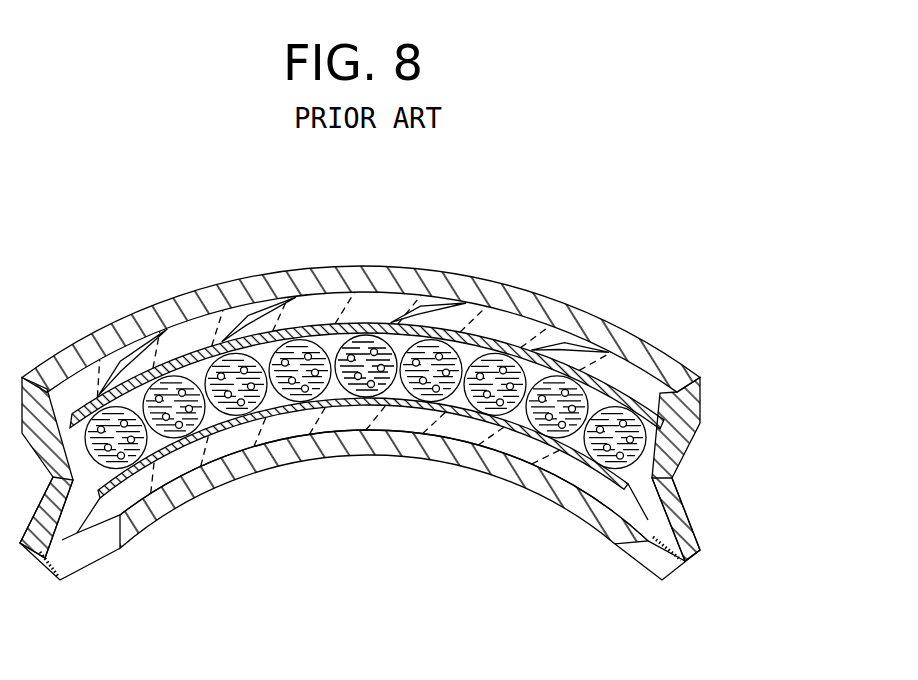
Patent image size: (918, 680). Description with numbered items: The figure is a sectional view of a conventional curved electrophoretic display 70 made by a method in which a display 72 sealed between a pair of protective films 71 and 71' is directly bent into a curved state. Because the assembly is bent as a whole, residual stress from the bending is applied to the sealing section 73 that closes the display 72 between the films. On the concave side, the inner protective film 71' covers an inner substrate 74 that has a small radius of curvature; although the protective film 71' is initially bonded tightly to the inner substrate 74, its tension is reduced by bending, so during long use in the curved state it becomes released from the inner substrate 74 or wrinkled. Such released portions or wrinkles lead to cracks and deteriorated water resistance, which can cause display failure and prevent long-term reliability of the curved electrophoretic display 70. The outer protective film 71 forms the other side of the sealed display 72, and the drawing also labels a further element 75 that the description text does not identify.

The curved electrophoretic display 70 is at (748, 242).
The protective film 71 is at (360, 378).
The protective film 71' is at (360, 505).
The display 72 is at (648, 441).
The sealing section 73 is at (72, 552).
The inner substrate 74 is at (577, 502).
The outer raceway layer 75 is at (638, 378).